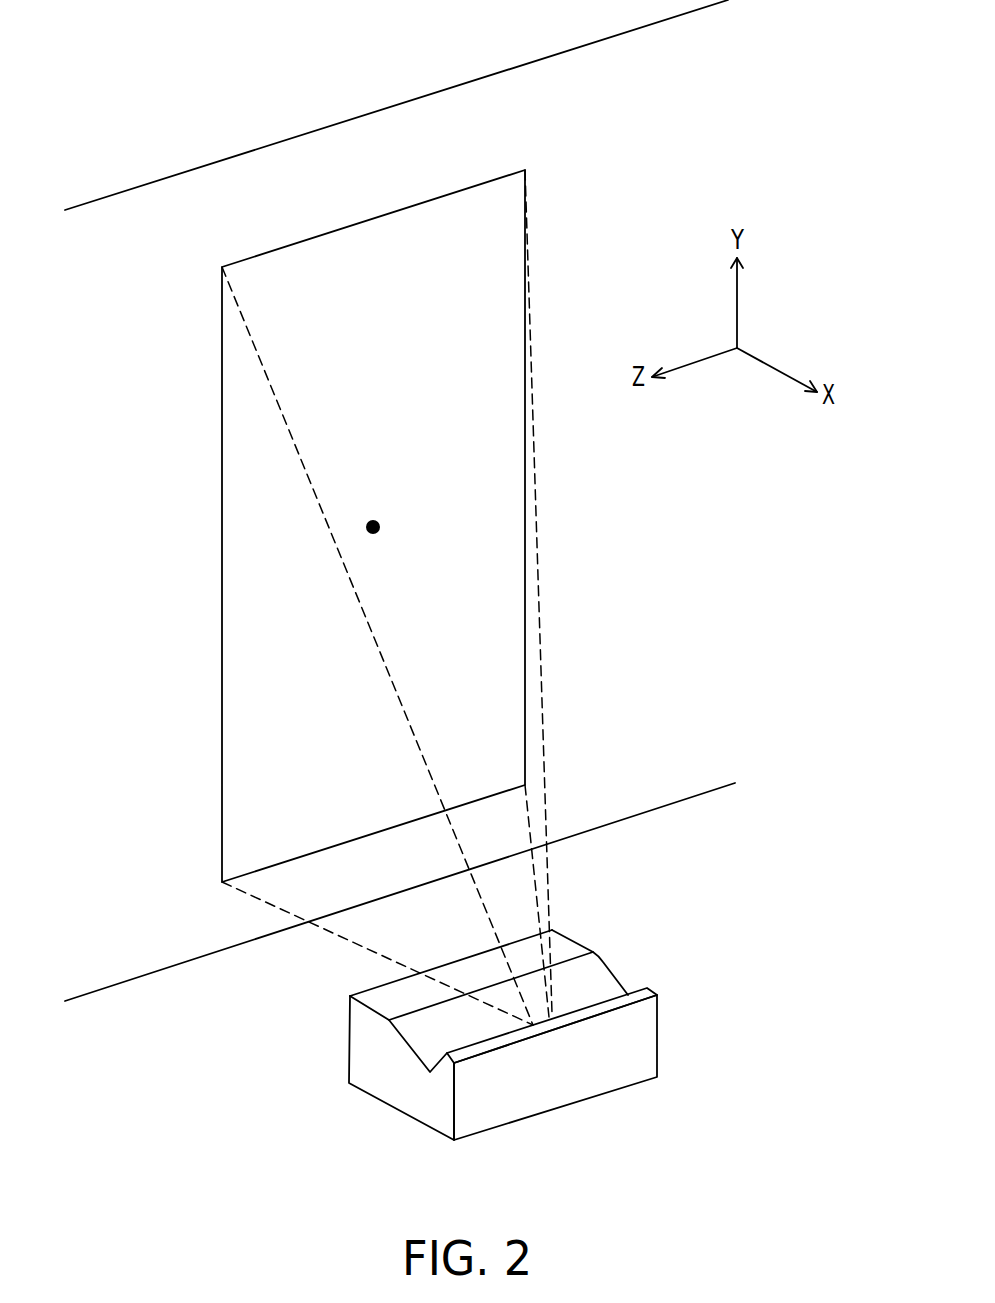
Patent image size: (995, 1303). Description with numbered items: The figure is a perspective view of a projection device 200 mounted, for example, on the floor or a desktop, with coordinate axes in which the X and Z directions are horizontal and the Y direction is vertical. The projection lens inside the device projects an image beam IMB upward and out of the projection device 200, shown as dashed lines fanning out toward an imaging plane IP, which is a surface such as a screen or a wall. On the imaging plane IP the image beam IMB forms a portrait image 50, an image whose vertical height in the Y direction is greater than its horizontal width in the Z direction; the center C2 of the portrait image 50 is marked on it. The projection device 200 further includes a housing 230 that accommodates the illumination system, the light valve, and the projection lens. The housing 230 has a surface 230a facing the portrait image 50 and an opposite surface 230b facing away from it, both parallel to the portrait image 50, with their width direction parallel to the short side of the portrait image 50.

The imaging plane IP is at (128, 236).
The portrait image 50 is at (276, 248).
The center of the portrait image C2 is at (375, 519).
The image beam IMB is at (545, 792).
The projection device 200 is at (511, 1025).
The housing 230 is at (601, 958).
The surface of the housing 230a is at (348, 1025).
The surface of the housing 230b is at (555, 1078).